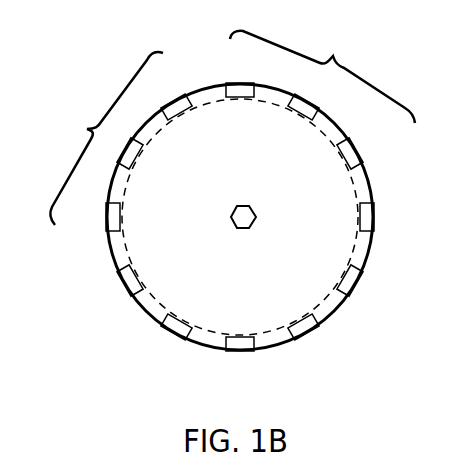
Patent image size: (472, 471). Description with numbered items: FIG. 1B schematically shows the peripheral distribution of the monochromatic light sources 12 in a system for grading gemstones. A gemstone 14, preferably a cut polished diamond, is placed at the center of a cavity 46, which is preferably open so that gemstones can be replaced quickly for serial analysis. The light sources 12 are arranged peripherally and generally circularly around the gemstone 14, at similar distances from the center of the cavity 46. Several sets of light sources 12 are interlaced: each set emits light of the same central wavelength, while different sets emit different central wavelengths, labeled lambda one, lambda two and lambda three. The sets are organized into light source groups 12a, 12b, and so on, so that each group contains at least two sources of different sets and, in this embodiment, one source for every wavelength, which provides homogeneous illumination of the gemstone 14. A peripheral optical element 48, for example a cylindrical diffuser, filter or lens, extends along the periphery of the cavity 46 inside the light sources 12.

The monochromatic light sources 12 is at (232, 96).
The light source group 12a is at (106, 138).
The light source group 12b is at (322, 77).
The gemstone 14 is at (229, 217).
The cavity 46 is at (333, 315).
The peripheral optical element 48 is at (350, 178).